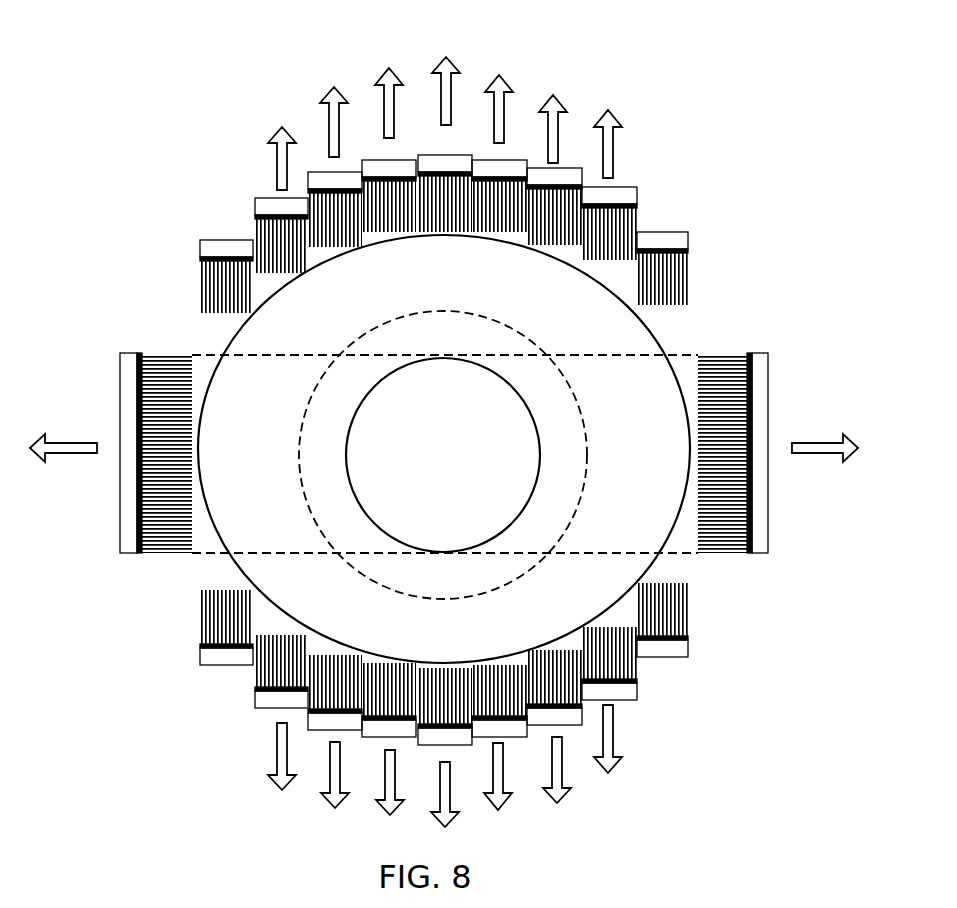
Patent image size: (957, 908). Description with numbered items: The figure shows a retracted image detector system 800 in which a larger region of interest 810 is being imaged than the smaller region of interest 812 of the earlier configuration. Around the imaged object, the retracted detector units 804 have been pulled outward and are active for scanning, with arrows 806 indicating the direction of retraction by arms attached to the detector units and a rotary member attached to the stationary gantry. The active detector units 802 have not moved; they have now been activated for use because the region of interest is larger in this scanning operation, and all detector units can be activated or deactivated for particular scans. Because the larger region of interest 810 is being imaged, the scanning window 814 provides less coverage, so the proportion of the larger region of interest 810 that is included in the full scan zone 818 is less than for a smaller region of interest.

The retracted image detector system 800 is at (298, 76).
The active detector units 802 is at (442, 440).
The retracted detector units 804 is at (623, 200).
The arrows 806 is at (505, 105).
The larger region of interest 810 is at (653, 563).
The smaller region of interest 812 is at (585, 427).
The scanning window 814 is at (690, 352).
The full scan zone 818 is at (537, 415).